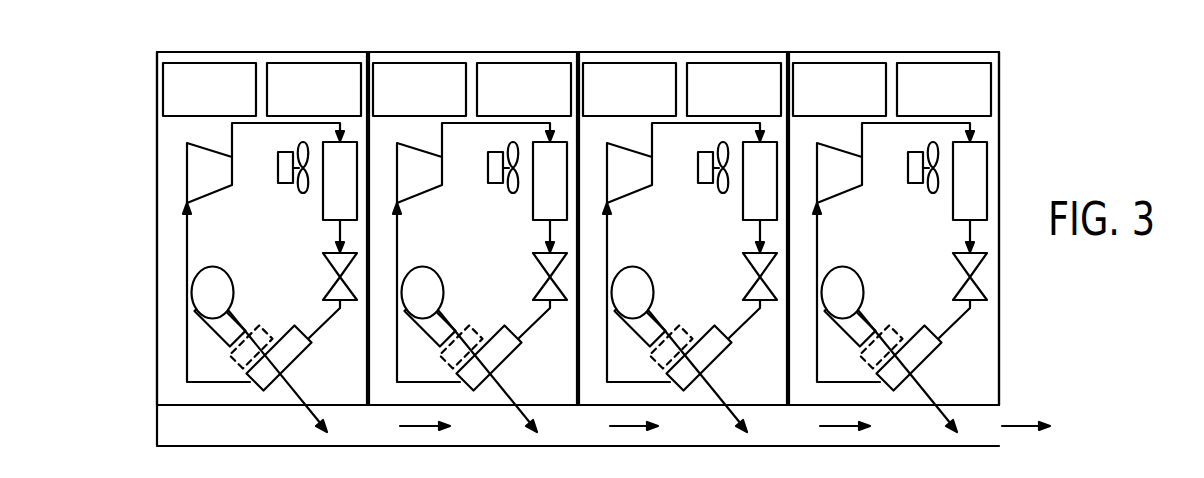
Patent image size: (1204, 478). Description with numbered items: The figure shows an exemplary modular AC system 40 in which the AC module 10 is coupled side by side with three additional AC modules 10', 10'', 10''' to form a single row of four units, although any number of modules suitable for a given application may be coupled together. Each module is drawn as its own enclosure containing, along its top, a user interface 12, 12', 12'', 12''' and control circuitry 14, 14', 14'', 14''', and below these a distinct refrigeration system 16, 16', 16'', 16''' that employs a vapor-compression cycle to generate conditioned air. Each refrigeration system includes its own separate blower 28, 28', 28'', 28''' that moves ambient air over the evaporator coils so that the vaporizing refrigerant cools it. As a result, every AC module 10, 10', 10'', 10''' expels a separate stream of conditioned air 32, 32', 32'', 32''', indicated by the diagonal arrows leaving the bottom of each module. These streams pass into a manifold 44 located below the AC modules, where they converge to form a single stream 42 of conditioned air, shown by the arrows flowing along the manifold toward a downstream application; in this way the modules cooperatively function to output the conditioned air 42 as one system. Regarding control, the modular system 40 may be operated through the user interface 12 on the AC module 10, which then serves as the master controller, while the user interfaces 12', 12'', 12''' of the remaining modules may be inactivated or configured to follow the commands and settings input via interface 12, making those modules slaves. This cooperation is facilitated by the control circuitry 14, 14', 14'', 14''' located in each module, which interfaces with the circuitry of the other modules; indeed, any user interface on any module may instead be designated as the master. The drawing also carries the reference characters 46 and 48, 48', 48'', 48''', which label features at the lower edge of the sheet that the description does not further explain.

The modular AC system 40 is at (136, 57).
The AC module 10 is at (263, 214).
The AC module 10' is at (473, 214).
The AC module 10'' is at (683, 214).
The AC module 10''' is at (893, 214).
The user interface 12 is at (327, 70).
The user interface 12' is at (540, 70).
The user interface 12'' is at (753, 70).
The user interface 12''' is at (966, 70).
The control circuitry 14 is at (209, 70).
The control circuitry 14' is at (420, 70).
The control circuitry 14'' is at (632, 70).
The control circuitry 14''' is at (845, 70).
The refrigeration system 16 is at (232, 195).
The refrigeration system 16' is at (445, 195).
The refrigeration system 16'' is at (657, 195).
The refrigeration system 16''' is at (870, 195).
The blower 28 is at (237, 307).
The blower 28' is at (450, 307).
The blower 28'' is at (663, 307).
The blower 28''' is at (875, 307).
The stream of conditioned air 32 is at (285, 371).
The stream of conditioned air 32' is at (498, 371).
The stream of conditioned air 32'' is at (710, 371).
The stream of conditioned air 32''' is at (923, 371).
The single stream of conditioned air 42 is at (418, 428).
The manifold 44 is at (146, 421).
The second air duct 46 is at (146, 472).
The fan 48 is at (292, 467).
The fan 48' is at (505, 467).
The fan 48'' is at (718, 467).
The fan 48''' is at (931, 467).